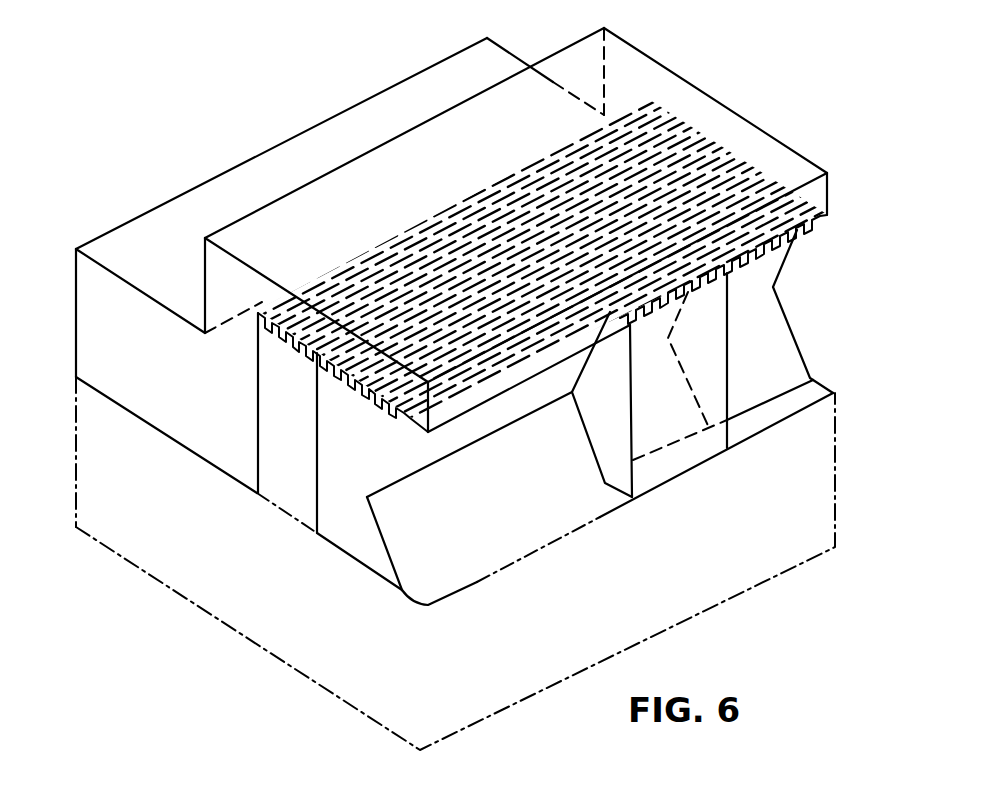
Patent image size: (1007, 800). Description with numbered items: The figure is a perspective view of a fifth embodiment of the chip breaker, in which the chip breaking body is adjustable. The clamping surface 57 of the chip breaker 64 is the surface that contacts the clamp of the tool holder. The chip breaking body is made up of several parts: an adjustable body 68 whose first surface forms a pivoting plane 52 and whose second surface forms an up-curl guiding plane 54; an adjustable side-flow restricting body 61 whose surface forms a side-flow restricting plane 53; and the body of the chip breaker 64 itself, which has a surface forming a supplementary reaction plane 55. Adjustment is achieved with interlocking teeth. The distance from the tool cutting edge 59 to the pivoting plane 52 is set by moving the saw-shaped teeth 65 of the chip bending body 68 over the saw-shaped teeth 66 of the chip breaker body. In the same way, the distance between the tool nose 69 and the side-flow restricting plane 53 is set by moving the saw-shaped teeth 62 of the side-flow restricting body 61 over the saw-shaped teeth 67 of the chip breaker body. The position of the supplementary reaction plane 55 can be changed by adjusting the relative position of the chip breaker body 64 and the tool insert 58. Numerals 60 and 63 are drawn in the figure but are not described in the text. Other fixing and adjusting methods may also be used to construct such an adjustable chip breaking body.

The pivoting plane 52 is at (478, 513).
The side-flow restricting plane 53 is at (620, 445).
The up-curl guiding plane 54 is at (495, 415).
The supplementary reaction plane 55 is at (532, 380).
The clamping surface 57 is at (278, 165).
The tool insert 58 is at (300, 622).
The tool cutting edge 59 is at (477, 583).
The flange corner 60 is at (440, 590).
The adjustable side-flow restricting body 61 is at (700, 372).
The saw-shaped teeth 62 is at (725, 280).
The flange top surface 63 is at (683, 475).
The chip breaker 64 is at (100, 308).
The saw-shaped teeth 65 is at (355, 382).
The saw-shaped teeth 66 is at (310, 345).
The saw-shaped teeth 67 is at (807, 227).
The adjustable body 68 is at (337, 525).
The tool nose 69 is at (427, 605).